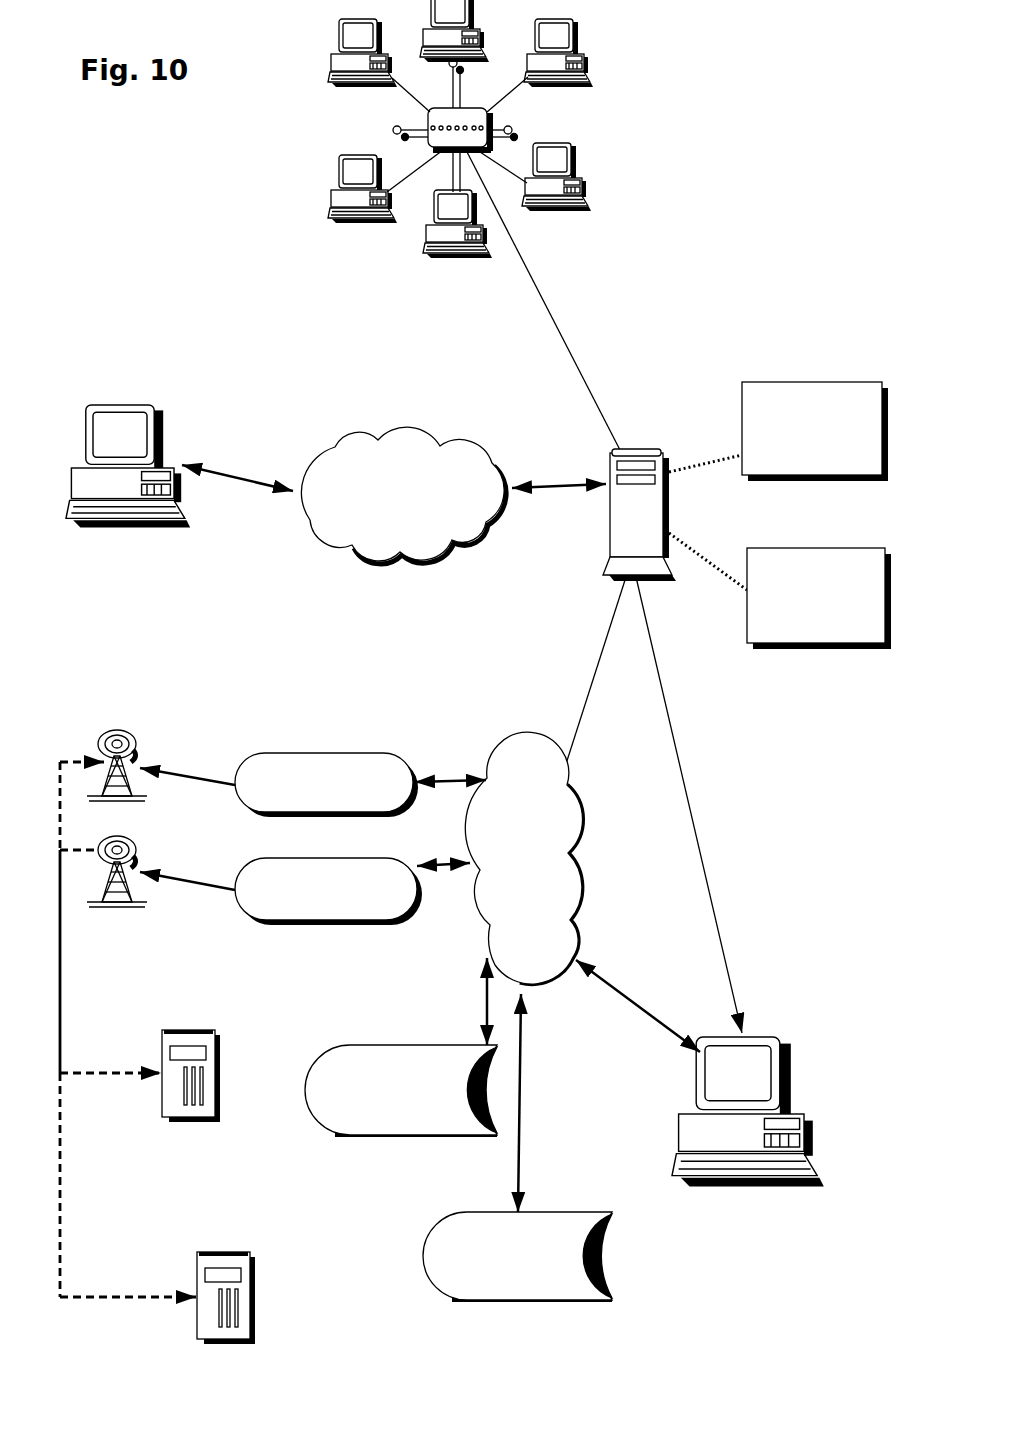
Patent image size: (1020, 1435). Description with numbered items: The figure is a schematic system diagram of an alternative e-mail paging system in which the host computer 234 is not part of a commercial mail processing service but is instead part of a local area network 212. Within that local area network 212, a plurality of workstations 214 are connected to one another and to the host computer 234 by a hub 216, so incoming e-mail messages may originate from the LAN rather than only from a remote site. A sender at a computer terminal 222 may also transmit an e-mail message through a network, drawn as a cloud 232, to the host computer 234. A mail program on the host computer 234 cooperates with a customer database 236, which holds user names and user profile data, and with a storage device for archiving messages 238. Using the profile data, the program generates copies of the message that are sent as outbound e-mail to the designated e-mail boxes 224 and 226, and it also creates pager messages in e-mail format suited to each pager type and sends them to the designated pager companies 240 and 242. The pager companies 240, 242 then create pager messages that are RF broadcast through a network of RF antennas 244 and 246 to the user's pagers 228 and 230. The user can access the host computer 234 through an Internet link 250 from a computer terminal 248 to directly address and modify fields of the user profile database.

The local area network 212 is at (612, 108).
The workstations 214 is at (578, 28).
The hub 216 is at (427, 122).
The computer terminal 222 is at (152, 407).
The e-mail box 224 is at (432, 1045).
The e-mail box 226 is at (469, 1212).
The pager 228 is at (185, 1030).
The pager 230 is at (205, 1252).
The network 232 is at (382, 433).
The host computer 234 is at (640, 452).
The customer database 236 is at (821, 382).
The storage device for archiving messages 238 is at (848, 548).
The pager company 240 is at (288, 753).
The pager company 242 is at (260, 860).
The RF antenna 244 is at (130, 732).
The RF antenna 246 is at (133, 848).
The computer terminal 248 is at (712, 1185).
The Internet link 250 is at (590, 830).